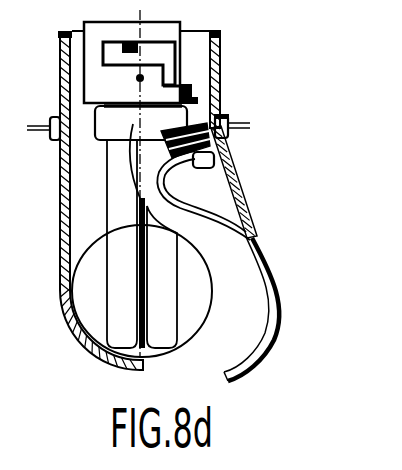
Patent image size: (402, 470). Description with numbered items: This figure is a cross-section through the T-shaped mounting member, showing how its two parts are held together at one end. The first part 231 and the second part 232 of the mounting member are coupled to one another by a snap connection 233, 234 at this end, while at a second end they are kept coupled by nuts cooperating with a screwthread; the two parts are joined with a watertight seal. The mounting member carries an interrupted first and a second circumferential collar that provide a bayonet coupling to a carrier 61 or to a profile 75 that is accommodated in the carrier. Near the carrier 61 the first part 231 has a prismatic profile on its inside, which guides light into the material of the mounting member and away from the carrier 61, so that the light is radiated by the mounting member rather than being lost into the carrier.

The first part 231 is at (274, 337).
The second part 232 is at (85, 351).
The snap connection 233 is at (127, 140).
The snap connection 234 is at (228, 162).
The carrier 61 is at (30, 109).
The profile 75 is at (43, 127).